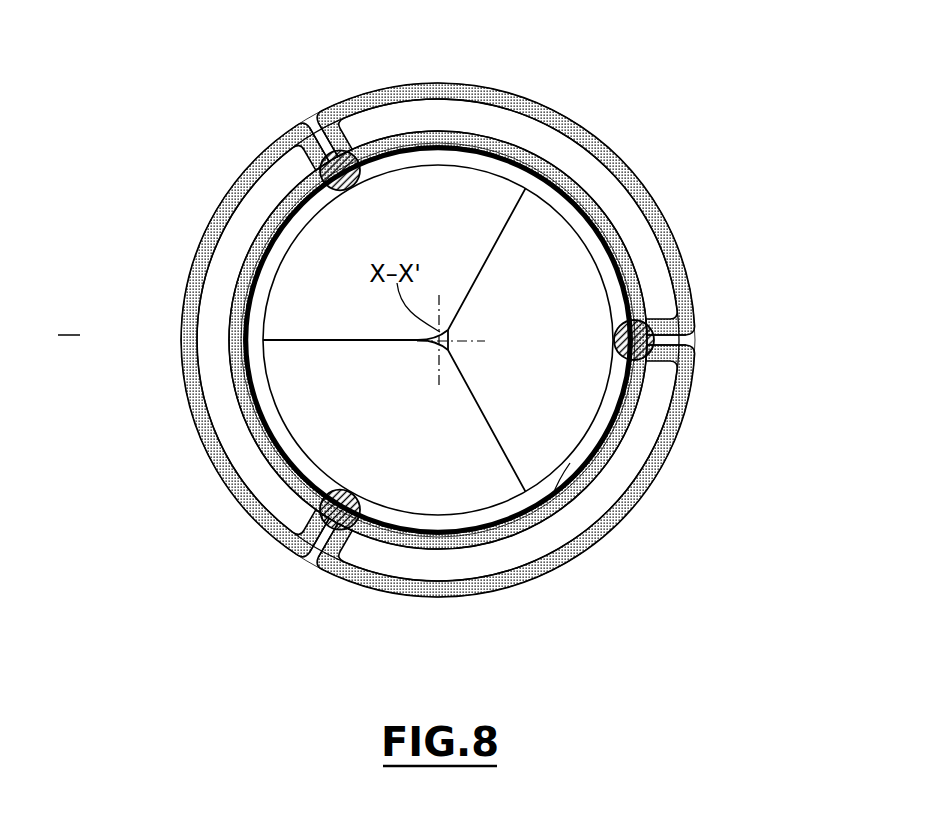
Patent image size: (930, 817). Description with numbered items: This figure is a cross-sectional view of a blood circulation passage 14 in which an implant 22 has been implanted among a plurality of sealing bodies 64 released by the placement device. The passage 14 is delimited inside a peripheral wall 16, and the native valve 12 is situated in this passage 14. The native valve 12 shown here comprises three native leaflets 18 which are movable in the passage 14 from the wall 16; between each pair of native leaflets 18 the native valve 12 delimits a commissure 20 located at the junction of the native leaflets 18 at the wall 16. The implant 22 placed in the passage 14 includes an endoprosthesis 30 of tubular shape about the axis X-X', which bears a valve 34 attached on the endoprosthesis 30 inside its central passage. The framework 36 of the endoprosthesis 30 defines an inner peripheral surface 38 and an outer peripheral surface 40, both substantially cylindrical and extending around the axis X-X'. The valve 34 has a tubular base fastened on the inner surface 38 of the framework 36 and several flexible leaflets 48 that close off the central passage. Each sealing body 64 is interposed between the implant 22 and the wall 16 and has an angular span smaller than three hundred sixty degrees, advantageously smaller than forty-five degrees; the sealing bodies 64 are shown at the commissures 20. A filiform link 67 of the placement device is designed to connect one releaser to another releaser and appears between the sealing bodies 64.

The native valve 12 is at (695, 248).
The blood circulation passage 14 is at (448, 338).
The peripheral wall 16 is at (68, 320).
The native leaflets 18 is at (547, 145).
The commissure 20 is at (317, 125).
The implant 22 is at (242, 412).
The endoprosthesis 30 is at (605, 412).
The valve 34 is at (267, 468).
The framework 36 is at (272, 212).
The inner peripheral surface 38 is at (552, 210).
The outer peripheral surface 40 is at (587, 483).
The flexible leaflets 48 is at (407, 462).
The sealing body 64 is at (355, 180).
The filiform link 67 is at (463, 132).